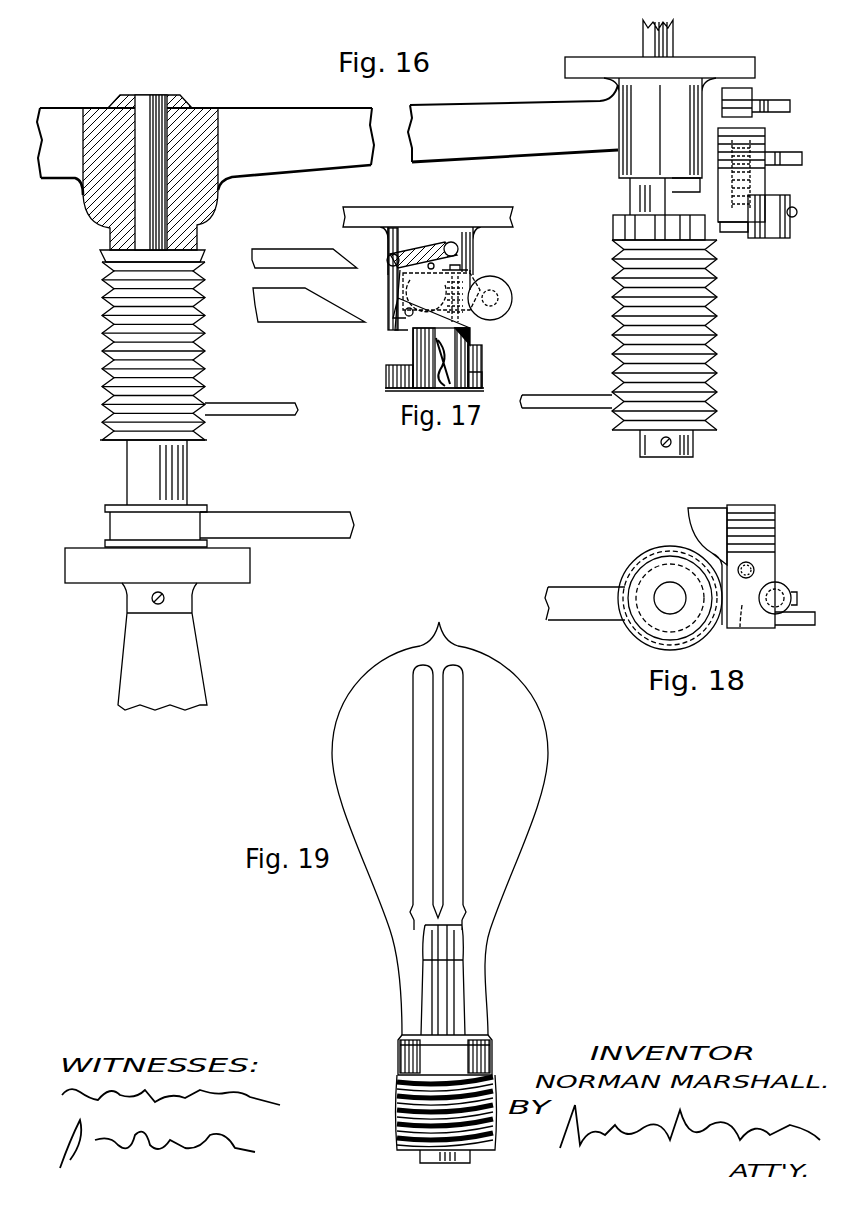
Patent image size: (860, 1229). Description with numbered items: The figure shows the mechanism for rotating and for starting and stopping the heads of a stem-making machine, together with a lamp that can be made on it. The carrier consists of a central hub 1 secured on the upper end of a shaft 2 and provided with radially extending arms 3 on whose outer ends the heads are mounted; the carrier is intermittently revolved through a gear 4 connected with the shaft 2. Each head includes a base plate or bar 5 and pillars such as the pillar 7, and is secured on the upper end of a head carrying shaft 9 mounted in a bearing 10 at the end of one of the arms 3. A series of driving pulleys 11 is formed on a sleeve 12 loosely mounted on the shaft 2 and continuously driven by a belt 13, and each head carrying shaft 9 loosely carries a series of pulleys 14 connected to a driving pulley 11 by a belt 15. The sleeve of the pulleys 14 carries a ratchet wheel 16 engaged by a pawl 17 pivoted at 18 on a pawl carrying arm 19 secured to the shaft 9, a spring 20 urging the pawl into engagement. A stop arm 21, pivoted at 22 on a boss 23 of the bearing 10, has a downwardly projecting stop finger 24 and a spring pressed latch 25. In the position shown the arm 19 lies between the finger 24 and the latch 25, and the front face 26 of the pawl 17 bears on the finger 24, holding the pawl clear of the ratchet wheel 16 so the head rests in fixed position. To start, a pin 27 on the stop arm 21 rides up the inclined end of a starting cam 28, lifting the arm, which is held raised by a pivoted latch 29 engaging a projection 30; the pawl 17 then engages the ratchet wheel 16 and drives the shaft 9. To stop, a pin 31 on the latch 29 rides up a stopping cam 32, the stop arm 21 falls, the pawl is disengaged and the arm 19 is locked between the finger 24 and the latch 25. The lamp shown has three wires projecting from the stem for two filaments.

In FIG. 16, the central hub 1 is at (212, 222).
In FIG. 16, the shaft 2 is at (150, 100).
In FIG. 16, the radially extending arms 3 is at (482, 112).
In FIG. 16, the gear 4 is at (238, 565).
In FIG. 16, the base plate or bar 5 is at (745, 66).
In FIG. 16, the pillar 7 is at (674, 40).
In FIG. 18, the head carrying shaft 9 is at (668, 598).
In FIG. 16, the bearing 10 is at (620, 168).
In FIG. 17, the bearing 10 is at (475, 252).
In FIG. 16, the driving pulleys 11 is at (200, 438).
In FIG. 16, the sleeve 12 is at (185, 478).
In FIG. 16, the belt 13 is at (300, 522).
In FIG. 16, the pulleys 14 is at (718, 372).
In FIG. 16, the belt 15 is at (545, 402).
In FIG. 16, the ratchet wheel 16 is at (613, 232).
In FIG. 17, the ratchet wheel 16 is at (480, 381).
In FIG. 16, the pawl 17 is at (732, 232).
In FIG. 17, the pawl 17 is at (470, 392).
In FIG. 18, the pawl 17 is at (752, 583).
In FIG. 18, the pivot 18 is at (778, 597).
In FIG. 16, the pawl carrying arm 19 is at (785, 200).
In FIG. 17, the pawl carrying arm 19 is at (458, 358).
In FIG. 17, the spring 20 is at (412, 392).
In FIG. 16, the stop arm 21 is at (782, 135).
In FIG. 17, the stop arm 21 is at (425, 310).
In FIG. 18, the stop arm 21 is at (775, 532).
In FIG. 17, the pivot 22 is at (512, 298).
In FIG. 17, the boss 23 is at (470, 275).
In FIG. 18, the boss 23 is at (685, 530).
In FIG. 17, the stop finger 24 is at (405, 352).
In FIG. 17, the spring pressed latch 25 is at (470, 334).
In FIG. 18, the front face 26 is at (742, 628).
In FIG. 16, the pin 27 is at (815, 152).
In FIG. 17, the pin 27 is at (405, 310).
In FIG. 18, the pin 27 is at (800, 625).
In FIG. 16, the starting cam 28 is at (312, 289).
In FIG. 16, the pivoted latch 29 is at (752, 98).
In FIG. 17, the pivoted latch 29 is at (430, 248).
In FIG. 17, the projection 30 is at (420, 265).
In FIG. 16, the pin 31 is at (790, 106).
In FIG. 17, the pin 31 is at (387, 258).
In FIG. 16, the stopping cam 32 is at (335, 250).